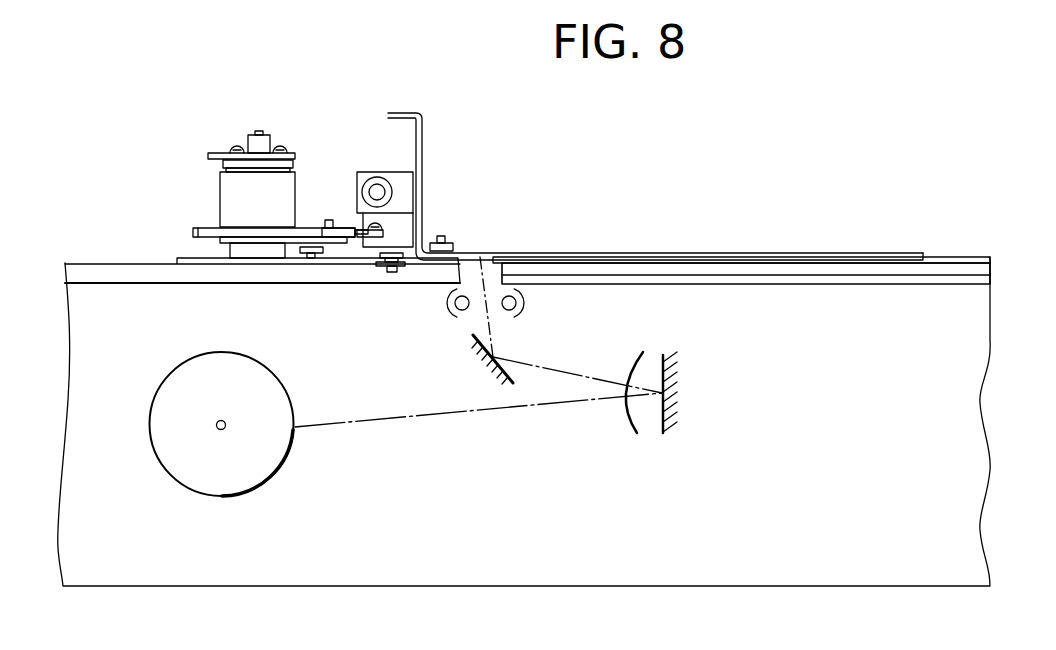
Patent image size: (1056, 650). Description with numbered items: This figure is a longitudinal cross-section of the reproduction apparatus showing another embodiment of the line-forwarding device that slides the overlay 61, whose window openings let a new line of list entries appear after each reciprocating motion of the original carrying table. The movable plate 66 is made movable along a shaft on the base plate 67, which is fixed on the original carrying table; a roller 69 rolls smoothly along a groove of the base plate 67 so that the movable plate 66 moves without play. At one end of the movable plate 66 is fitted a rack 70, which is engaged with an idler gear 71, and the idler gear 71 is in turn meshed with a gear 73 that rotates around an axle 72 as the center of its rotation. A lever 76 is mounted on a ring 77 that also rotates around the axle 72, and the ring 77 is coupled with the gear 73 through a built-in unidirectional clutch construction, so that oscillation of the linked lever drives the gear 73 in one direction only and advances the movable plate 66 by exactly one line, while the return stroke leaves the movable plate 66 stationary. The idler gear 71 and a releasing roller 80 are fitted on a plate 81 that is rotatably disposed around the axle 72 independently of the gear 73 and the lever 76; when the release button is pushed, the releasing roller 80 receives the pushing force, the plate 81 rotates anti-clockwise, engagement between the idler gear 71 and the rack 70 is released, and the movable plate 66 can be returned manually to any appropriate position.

The overlay 61 is at (740, 264).
The movable plate 66 is at (422, 178).
The base plate 67 is at (207, 265).
The roller 69 is at (391, 273).
The rack 70 is at (353, 238).
The idler gear 71 is at (340, 228).
The axle 72 is at (258, 131).
The gear 73 is at (205, 227).
The lever 76 is at (218, 152).
The ring 77 is at (222, 163).
The releasing roller 80 is at (300, 259).
The plate 81 is at (243, 259).